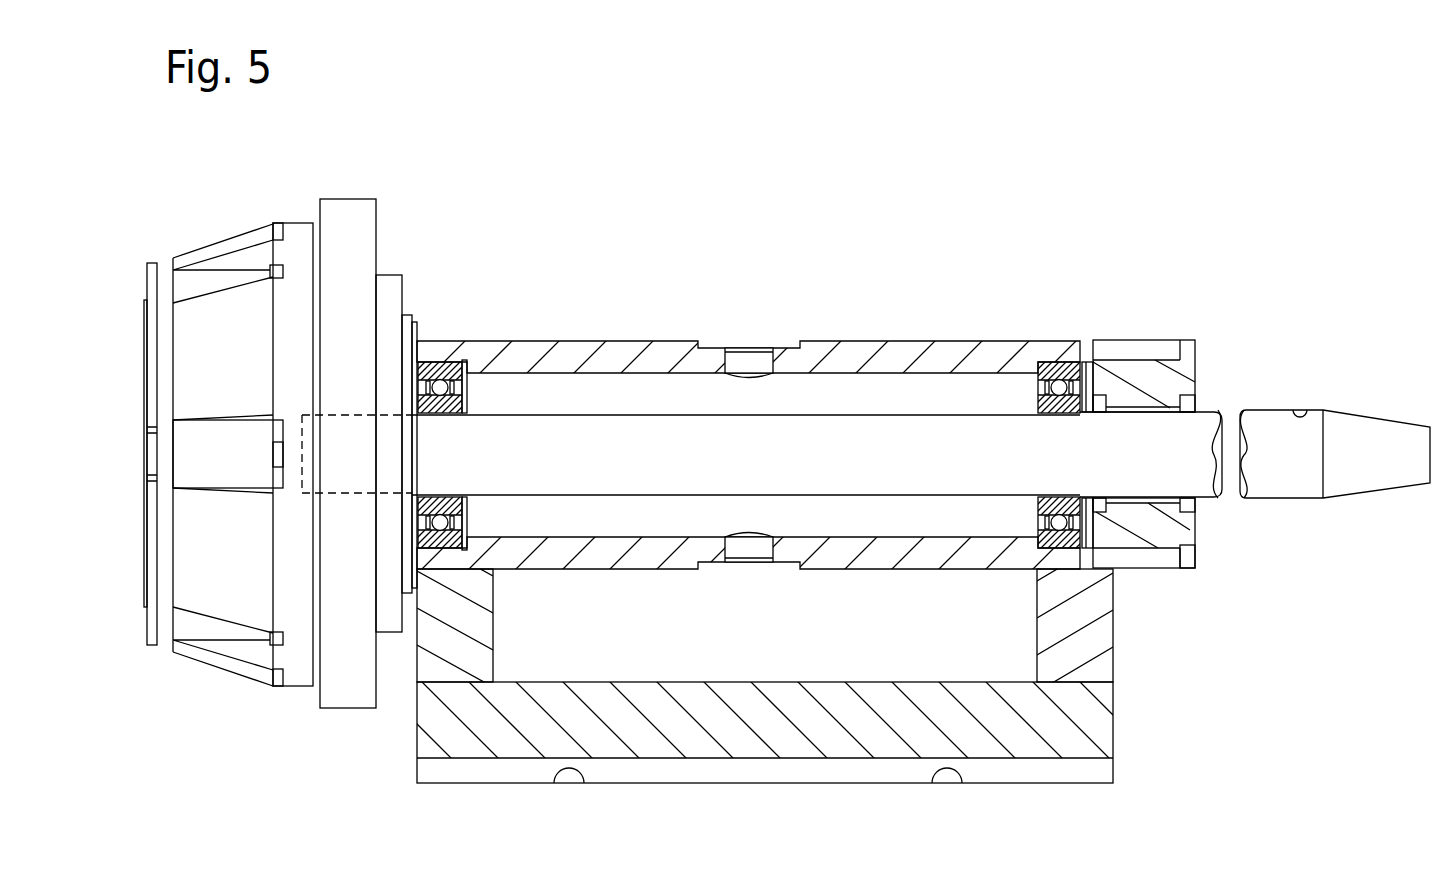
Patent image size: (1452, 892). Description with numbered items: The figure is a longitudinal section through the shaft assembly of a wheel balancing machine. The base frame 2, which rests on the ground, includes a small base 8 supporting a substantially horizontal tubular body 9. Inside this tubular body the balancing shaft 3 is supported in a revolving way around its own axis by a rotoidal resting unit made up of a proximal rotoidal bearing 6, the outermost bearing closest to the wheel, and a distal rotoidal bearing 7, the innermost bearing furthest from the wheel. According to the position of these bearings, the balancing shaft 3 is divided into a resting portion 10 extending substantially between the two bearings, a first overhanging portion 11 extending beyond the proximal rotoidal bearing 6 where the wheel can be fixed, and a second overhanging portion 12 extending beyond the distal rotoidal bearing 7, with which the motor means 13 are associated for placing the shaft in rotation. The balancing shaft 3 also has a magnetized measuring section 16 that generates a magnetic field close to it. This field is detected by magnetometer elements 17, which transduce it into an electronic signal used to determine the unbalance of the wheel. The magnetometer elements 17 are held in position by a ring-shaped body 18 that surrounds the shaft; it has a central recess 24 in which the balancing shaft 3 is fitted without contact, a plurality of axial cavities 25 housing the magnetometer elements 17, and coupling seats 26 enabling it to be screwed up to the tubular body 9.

The base frame 2 is at (769, 665).
The balancing shaft 3 is at (746, 376).
The proximal rotoidal bearing 6 is at (1047, 373).
The distal rotoidal bearing 7 is at (445, 383).
The small base 8 is at (1085, 735).
The tubular body 9 is at (556, 365).
The resting portion 10 is at (623, 432).
The first overhanging portion 11 is at (1303, 470).
The second overhanging portion 12 is at (352, 425).
The motor means 13 is at (362, 189).
The measuring section 16 is at (1163, 463).
The magnetometer elements 17 is at (1145, 405).
The ring-shaped body 18 is at (1140, 528).
The central recess 24 is at (1193, 405).
The axial cavities 25 is at (1168, 408).
The coupling seats 26 is at (1164, 452).